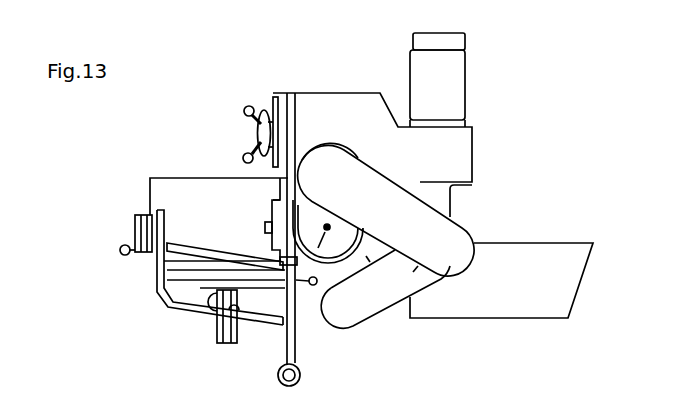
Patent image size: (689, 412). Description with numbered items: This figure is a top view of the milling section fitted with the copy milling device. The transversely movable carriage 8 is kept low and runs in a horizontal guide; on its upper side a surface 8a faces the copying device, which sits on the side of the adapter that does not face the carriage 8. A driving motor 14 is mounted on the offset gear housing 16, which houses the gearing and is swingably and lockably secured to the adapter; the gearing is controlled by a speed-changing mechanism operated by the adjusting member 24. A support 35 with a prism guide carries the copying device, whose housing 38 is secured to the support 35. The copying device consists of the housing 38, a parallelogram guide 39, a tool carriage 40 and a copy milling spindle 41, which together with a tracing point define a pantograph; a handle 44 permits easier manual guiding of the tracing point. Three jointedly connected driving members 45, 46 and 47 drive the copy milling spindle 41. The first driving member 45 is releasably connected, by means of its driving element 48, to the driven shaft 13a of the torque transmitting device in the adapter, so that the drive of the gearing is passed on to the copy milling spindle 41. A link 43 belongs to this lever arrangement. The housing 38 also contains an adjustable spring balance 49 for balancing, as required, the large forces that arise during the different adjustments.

The transversely movable carriage 8 is at (533, 255).
The guide surface 8a is at (440, 202).
The driven shaft 13a is at (302, 297).
The driving motor 14 is at (445, 102).
The gear housing 16 is at (335, 112).
The adjusting member 24 is at (245, 116).
The support 35 is at (273, 203).
The housing 38 is at (155, 198).
The parallelogram guide 39 is at (187, 277).
The tool carriage 40 is at (180, 295).
The copy milling spindle 41 is at (345, 300).
The arm 43 is at (193, 310).
The handle 44 is at (282, 369).
The first driving member 45 is at (288, 93).
The driving member 46 is at (358, 158).
The driving member 47 is at (413, 272).
The driving element 48 is at (370, 262).
The adjustable spring balance 49 is at (135, 235).